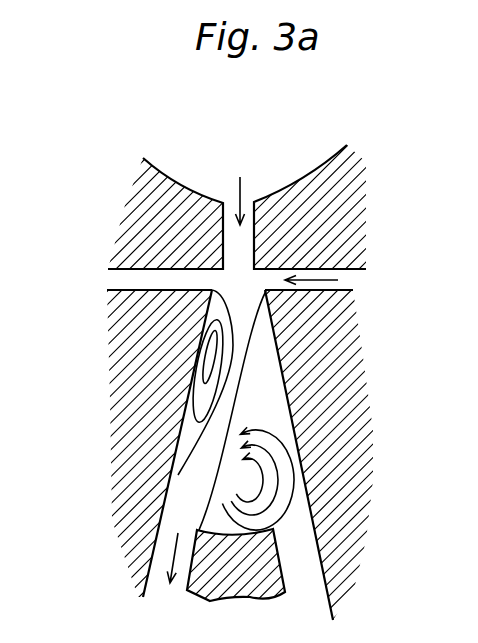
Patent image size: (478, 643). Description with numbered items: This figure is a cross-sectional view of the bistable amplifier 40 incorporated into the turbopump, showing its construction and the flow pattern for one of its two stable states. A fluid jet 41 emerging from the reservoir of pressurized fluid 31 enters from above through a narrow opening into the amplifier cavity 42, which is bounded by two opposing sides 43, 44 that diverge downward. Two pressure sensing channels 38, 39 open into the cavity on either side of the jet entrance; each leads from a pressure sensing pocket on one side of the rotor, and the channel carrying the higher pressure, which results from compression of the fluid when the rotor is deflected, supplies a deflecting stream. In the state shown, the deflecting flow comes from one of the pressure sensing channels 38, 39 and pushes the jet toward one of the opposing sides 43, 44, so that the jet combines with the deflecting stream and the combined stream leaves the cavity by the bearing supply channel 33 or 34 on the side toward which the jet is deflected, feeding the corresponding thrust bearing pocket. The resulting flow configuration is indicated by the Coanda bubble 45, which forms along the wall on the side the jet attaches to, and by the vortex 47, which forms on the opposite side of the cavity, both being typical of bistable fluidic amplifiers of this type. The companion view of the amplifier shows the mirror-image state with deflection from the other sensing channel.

The reservoir for pressurized fluid 31 is at (187, 175).
The bearing supply channel 33 is at (162, 557).
The bearing supply channel 34 is at (310, 575).
The pressure sensing channel 38 is at (166, 283).
The pressure sensing channel 39 is at (325, 273).
The bistable amplifier 40 is at (68, 247).
The fluid jet 41 is at (243, 192).
The amplifier cavity 42 is at (238, 318).
The opposing side of the cavity 43 is at (163, 498).
The opposing side of the cavity 44 is at (360, 416).
The Coanda bubble 45 is at (208, 362).
The vortex 47 is at (301, 475).